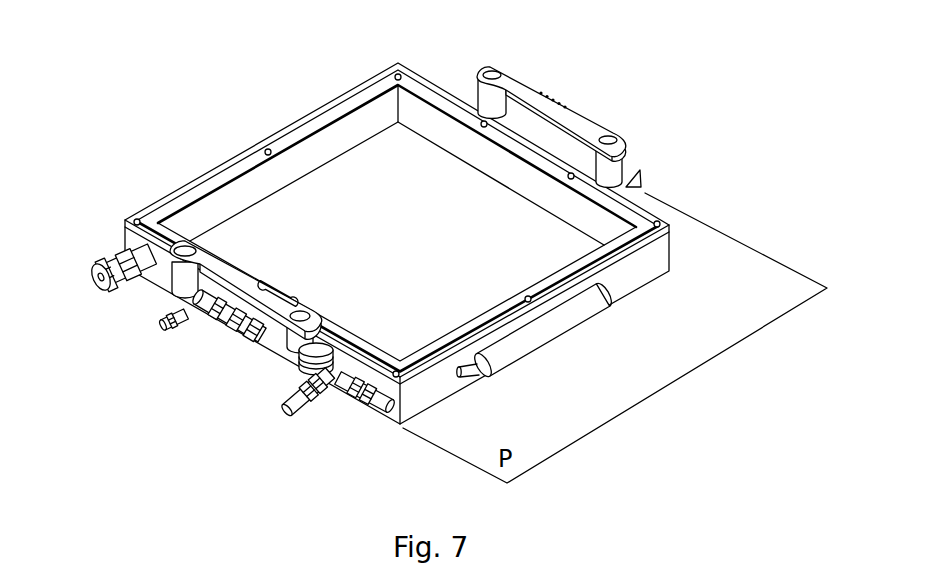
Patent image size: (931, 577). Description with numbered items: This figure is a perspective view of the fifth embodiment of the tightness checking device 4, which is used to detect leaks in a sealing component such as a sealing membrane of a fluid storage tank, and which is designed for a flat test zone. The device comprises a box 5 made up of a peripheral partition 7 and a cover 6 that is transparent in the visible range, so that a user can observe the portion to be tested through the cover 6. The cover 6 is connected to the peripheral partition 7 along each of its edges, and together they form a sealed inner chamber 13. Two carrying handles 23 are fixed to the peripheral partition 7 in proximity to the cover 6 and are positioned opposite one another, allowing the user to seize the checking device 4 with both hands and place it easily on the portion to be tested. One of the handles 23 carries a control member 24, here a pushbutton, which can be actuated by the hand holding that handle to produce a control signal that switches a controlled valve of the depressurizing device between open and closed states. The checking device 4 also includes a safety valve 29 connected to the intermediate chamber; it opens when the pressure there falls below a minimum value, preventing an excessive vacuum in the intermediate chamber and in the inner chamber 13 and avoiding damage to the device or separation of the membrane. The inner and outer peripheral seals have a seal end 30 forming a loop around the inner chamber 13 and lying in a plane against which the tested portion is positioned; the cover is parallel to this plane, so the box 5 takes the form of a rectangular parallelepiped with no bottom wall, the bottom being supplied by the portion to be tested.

The tightness checking device 4 is at (190, 100).
The box 5 is at (397, 193).
The cover 6 is at (290, 167).
The peripheral partition 7 is at (658, 253).
The inner chamber 13 is at (288, 237).
The carrying handles 23 is at (577, 118).
The control member 24 is at (253, 340).
The safety valve 29 is at (114, 293).
The seal end 30 is at (637, 293).